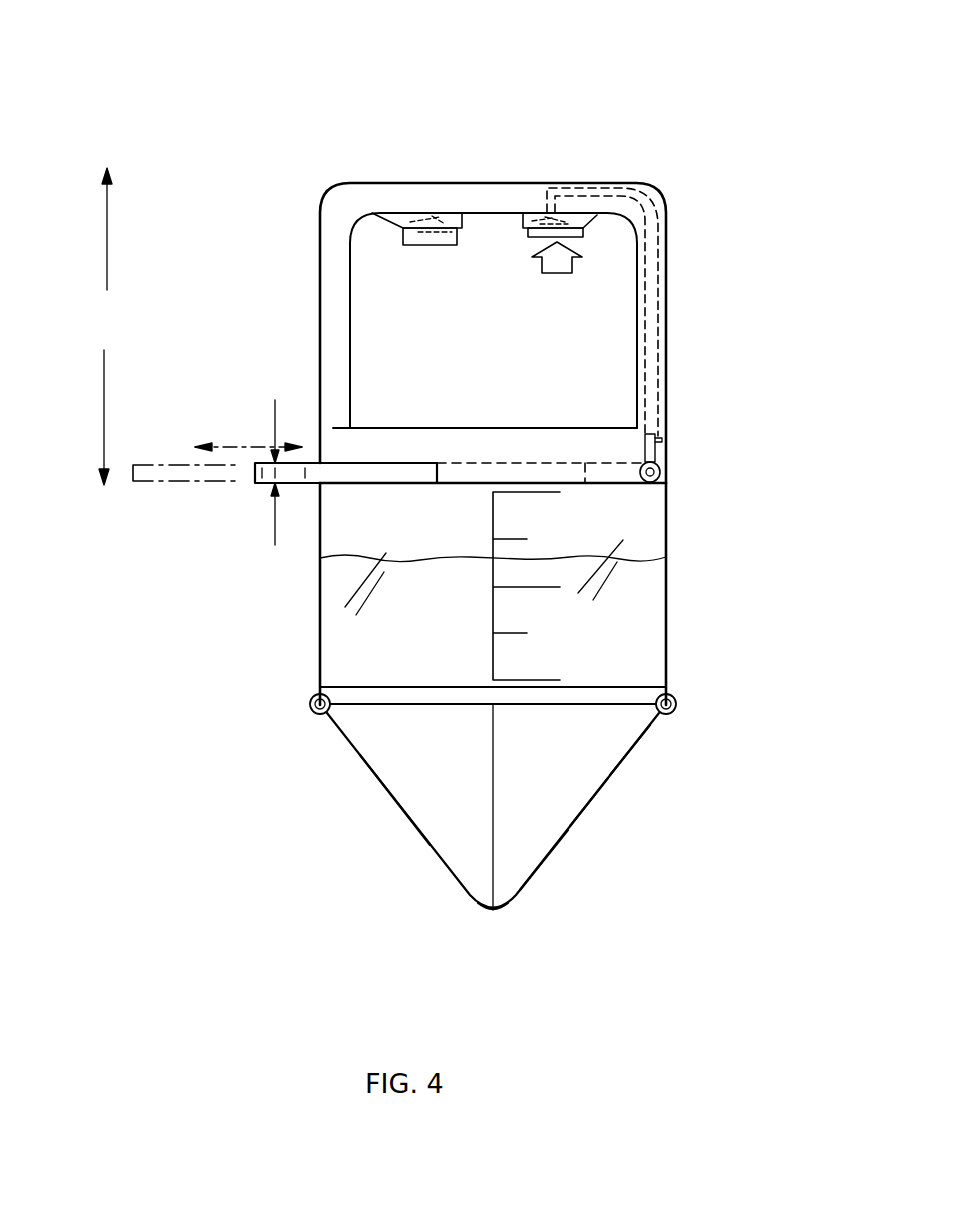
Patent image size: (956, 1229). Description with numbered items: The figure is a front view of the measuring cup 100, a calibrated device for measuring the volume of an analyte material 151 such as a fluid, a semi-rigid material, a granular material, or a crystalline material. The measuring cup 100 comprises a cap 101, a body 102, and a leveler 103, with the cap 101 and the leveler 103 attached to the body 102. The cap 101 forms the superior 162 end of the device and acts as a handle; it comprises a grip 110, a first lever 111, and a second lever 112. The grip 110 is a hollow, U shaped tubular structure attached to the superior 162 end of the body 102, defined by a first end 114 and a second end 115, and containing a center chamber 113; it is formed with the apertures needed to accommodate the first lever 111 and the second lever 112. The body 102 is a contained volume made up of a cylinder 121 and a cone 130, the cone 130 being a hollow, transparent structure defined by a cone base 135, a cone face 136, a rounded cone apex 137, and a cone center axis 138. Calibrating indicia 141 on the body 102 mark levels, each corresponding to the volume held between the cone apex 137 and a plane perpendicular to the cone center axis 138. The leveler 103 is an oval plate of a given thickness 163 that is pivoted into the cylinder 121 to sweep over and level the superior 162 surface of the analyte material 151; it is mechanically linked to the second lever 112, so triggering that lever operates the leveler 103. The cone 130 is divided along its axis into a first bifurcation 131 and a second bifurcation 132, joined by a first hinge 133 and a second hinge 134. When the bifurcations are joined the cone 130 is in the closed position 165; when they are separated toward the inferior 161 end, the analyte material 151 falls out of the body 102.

The measuring cup 100 is at (125, 88).
The cap 101 is at (715, 373).
The body 102 is at (700, 570).
The leveler 103 is at (252, 494).
The grip 110 is at (485, 183).
The first lever 111 is at (587, 237).
The second lever 112 is at (424, 245).
The center chamber 113 is at (650, 263).
The first end 114 is at (666, 415).
The second end 115 is at (320, 395).
The cylinder 121 is at (666, 515).
The cone 130 is at (362, 806).
The first bifurcation 131 is at (573, 798).
The second bifurcation 132 is at (440, 833).
The first hinge 133 is at (676, 704).
The second hinge 134 is at (310, 704).
The cone base 135 is at (430, 706).
The cone face 136 is at (518, 866).
The cone apex 137 is at (492, 912).
The cone center axis 138 is at (493, 797).
The calibrating indicia 141 is at (537, 617).
The analyte material 151 is at (368, 555).
The inferior 161 is at (104, 408).
The superior 162 is at (107, 265).
The thickness 163 is at (248, 492).
The closed position 165 is at (560, 841).